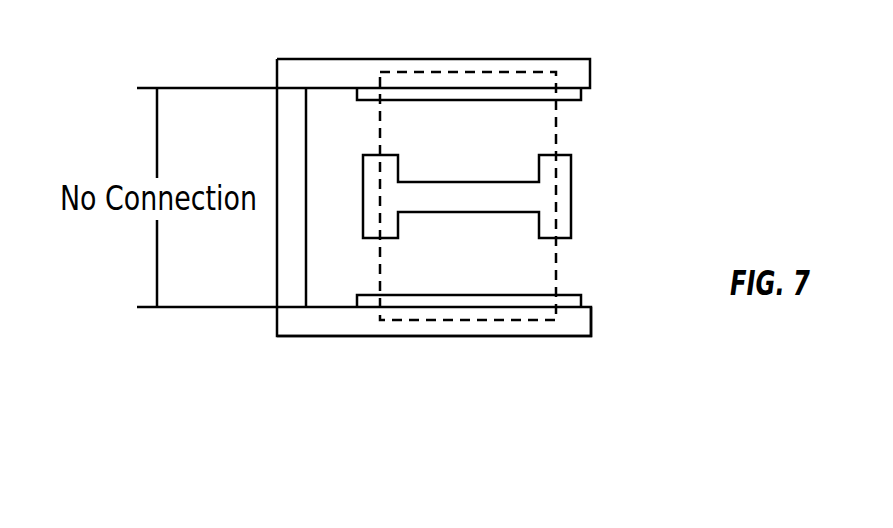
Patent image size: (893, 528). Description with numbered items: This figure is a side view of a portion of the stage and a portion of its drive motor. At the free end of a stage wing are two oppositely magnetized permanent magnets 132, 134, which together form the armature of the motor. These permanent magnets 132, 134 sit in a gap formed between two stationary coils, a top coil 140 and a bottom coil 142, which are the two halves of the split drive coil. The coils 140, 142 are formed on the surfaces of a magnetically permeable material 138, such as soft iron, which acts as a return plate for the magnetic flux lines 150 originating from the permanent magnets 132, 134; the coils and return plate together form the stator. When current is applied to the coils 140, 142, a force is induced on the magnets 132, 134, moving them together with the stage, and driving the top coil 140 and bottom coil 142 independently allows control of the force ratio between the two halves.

The permanent magnet 132 is at (572, 200).
The permanent magnet 134 is at (394, 226).
The magnetically permeable material 138 is at (577, 67).
The top coil 140 is at (570, 92).
The bottom coil 142 is at (575, 296).
The magnetic flux lines 150 is at (554, 140).